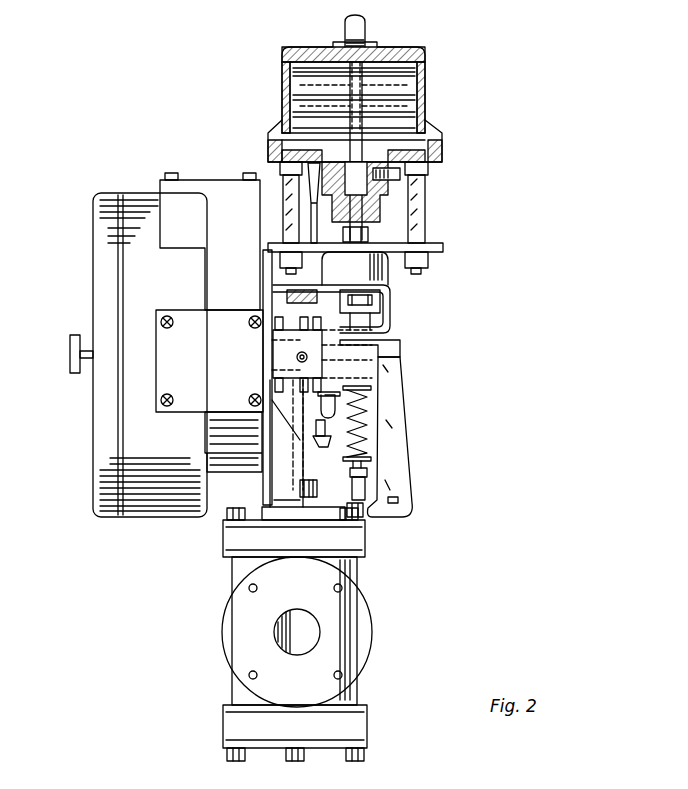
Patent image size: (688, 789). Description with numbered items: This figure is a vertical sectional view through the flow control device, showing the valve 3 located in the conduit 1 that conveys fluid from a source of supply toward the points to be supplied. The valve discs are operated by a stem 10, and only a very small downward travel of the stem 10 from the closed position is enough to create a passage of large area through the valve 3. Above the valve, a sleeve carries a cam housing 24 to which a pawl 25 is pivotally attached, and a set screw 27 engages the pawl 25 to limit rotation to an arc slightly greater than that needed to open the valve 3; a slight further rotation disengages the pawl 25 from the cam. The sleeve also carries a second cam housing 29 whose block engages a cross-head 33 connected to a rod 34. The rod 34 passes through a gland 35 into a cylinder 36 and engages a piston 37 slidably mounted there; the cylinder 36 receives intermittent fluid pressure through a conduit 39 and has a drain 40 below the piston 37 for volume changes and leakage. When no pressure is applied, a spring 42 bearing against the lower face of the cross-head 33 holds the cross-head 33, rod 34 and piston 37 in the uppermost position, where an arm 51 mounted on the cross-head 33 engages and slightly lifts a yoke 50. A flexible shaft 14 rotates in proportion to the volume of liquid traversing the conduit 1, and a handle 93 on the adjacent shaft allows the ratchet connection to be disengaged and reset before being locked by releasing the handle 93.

The conduit 1 is at (306, 632).
The valve 3 is at (358, 700).
The stem 10 is at (300, 487).
The flexible shaft 14 is at (268, 358).
The cam housing 24 is at (268, 295).
The pawl 25 is at (367, 412).
The set screw 27 is at (323, 445).
The cam housing 29 is at (390, 330).
The cross-head 33 is at (400, 346).
The rod 34 is at (440, 142).
The gland 35 is at (368, 232).
The cylinder 36 is at (425, 55).
The piston 37 is at (415, 90).
The conduit 39 is at (364, 30).
The drain 40 is at (400, 176).
The spring 42 is at (402, 432).
The yoke 50 is at (380, 300).
The arm 51 is at (378, 308).
The handle 93 is at (75, 355).